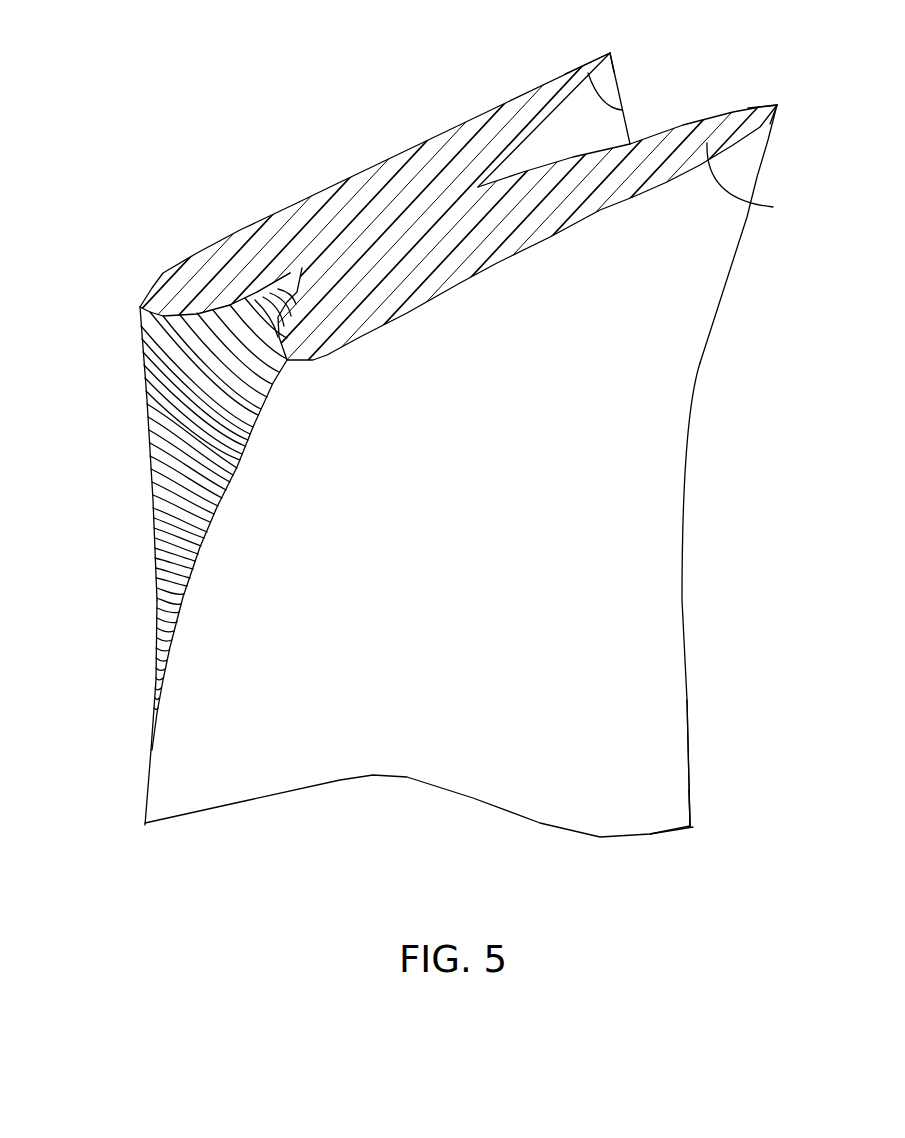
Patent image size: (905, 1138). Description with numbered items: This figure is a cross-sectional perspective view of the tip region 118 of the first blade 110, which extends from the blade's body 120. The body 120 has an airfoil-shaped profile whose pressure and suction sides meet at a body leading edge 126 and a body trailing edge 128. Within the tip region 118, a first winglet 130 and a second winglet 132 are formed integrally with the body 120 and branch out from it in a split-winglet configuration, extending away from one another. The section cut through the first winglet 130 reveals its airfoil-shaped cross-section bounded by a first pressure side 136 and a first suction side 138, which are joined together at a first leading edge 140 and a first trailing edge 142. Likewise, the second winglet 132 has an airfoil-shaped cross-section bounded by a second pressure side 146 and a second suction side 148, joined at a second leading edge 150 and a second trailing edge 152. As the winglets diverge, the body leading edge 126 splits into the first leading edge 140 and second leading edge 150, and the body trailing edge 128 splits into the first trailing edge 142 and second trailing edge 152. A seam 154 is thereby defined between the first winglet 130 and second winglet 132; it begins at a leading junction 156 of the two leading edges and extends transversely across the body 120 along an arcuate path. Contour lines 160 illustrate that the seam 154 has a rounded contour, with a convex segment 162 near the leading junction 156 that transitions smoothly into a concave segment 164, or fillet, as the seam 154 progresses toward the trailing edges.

The first blade 110 is at (148, 60).
The tip region 118 is at (704, 373).
The body 120 is at (696, 800).
The body leading edge 126 is at (146, 800).
The body trailing edge 128 is at (691, 762).
The first winglet 130 is at (500, 125).
The second winglet 132 is at (697, 136).
The first pressure side 136 is at (565, 74).
The first suction side 138 is at (622, 110).
The first leading edge 140 is at (146, 402).
The first trailing edge 142 is at (617, 64).
The second pressure side 146 is at (748, 108).
The second suction side 148 is at (773, 207).
The second leading edge 150 is at (239, 467).
The second trailing edge 152 is at (772, 143).
The seam 154 is at (294, 280).
The leading junction 156 is at (150, 760).
The contour lines 160 is at (167, 500).
The convex segment 162 is at (163, 567).
The concave segment 164 is at (243, 353).